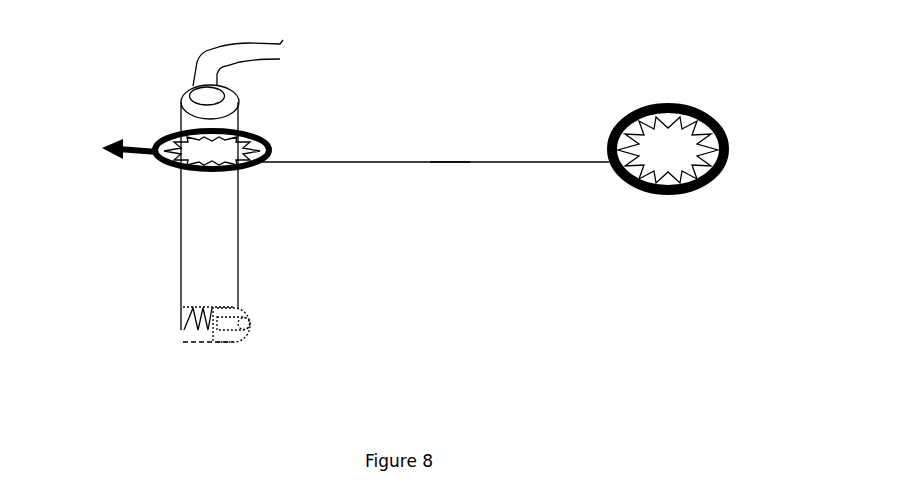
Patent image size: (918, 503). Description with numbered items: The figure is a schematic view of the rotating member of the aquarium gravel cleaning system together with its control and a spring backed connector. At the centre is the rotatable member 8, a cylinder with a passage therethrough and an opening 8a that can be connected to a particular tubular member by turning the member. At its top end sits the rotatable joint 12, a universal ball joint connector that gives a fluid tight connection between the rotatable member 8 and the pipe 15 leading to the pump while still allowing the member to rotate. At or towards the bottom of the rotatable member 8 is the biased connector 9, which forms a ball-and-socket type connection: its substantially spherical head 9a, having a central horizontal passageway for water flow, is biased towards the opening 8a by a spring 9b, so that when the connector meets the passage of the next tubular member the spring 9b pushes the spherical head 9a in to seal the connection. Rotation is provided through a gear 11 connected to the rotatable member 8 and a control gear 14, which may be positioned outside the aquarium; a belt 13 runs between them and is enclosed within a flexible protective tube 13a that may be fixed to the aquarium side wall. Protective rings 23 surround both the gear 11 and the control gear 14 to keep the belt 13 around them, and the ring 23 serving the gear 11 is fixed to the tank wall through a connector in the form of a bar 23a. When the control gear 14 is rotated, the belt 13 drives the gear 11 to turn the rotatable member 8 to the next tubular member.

The rotatable member 8 is at (195, 222).
The opening 8a is at (232, 312).
The biased connector 9 is at (228, 333).
The spherical head 9a is at (252, 327).
The spring 9b is at (180, 333).
The gear 11 is at (232, 147).
The rotatable joint 12 is at (212, 97).
The belt 13 is at (277, 160).
The protective tube 13a is at (447, 162).
The control gear 14 is at (703, 142).
The pipe 15 is at (213, 50).
The protective ring 23 is at (178, 133).
The bar 23a is at (114, 157).